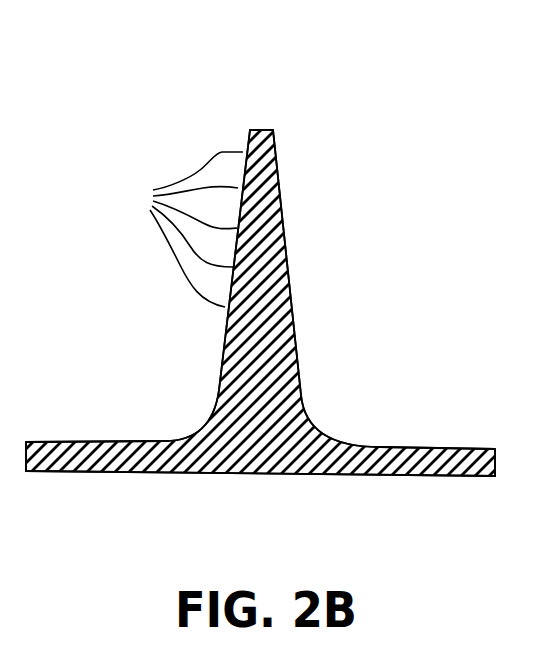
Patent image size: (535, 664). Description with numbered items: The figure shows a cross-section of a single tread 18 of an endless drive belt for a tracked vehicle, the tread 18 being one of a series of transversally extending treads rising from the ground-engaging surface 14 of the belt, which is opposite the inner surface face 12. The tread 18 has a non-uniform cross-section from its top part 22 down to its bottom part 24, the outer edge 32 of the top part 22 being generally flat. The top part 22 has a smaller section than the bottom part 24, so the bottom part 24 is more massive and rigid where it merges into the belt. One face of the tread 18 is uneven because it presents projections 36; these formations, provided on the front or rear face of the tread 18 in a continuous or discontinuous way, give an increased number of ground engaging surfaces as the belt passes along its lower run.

The tread 18 is at (162, 105).
The top part 22 is at (292, 139).
The outer edge 32 is at (252, 130).
The bottom part 24 is at (176, 424).
The ground-engaging surface 14 is at (458, 448).
The inner surface face 12 is at (455, 476).
The projections 36 is at (179, 229).